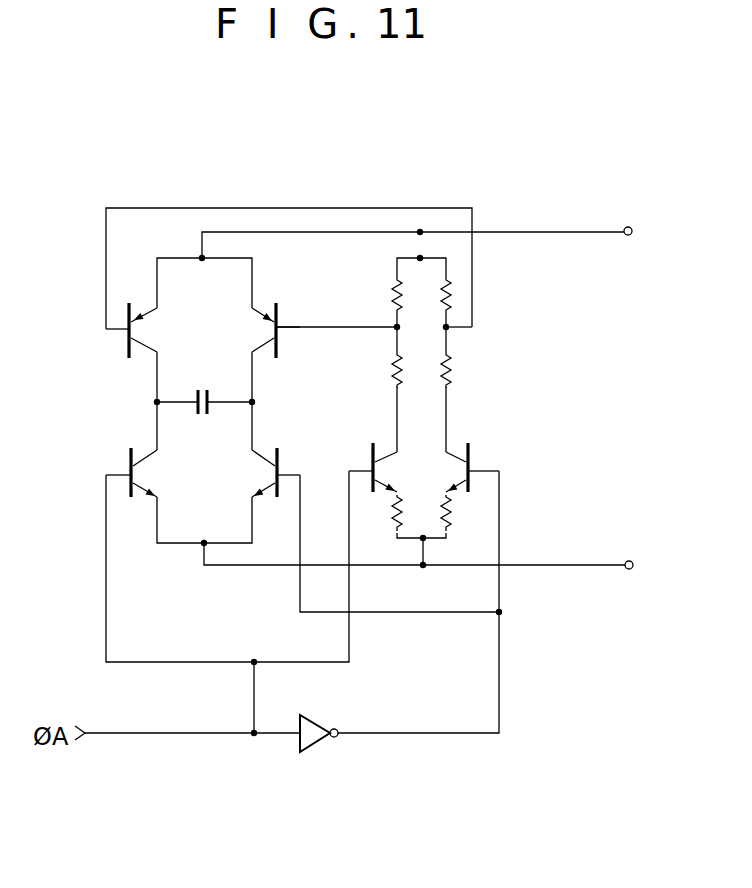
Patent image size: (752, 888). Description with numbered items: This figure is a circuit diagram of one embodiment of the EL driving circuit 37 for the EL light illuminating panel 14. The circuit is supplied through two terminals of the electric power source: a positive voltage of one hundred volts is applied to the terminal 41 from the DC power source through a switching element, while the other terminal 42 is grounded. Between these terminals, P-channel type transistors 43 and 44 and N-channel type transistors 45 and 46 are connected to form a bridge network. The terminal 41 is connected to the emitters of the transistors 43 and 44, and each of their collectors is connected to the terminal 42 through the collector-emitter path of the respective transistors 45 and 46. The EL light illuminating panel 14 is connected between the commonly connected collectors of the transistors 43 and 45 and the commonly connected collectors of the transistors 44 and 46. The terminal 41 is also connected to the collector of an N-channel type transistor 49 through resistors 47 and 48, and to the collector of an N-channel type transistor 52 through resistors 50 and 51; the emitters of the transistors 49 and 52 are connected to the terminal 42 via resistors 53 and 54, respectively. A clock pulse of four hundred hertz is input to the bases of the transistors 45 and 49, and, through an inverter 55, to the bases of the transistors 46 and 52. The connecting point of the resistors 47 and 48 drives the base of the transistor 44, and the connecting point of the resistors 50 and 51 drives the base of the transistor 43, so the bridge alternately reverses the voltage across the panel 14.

The EL driving circuit 37 is at (322, 207).
The terminal 41 is at (628, 227).
The terminal 42 is at (629, 560).
The P-channel type transistor 43 is at (145, 329).
The P-channel type transistor 44 is at (262, 336).
The EL light illuminating panel 14 is at (207, 394).
The N-channel type transistor 45 is at (150, 470).
The N-channel type transistor 46 is at (264, 477).
The resistor 47 is at (392, 300).
The resistor 48 is at (392, 374).
The N-channel type transistor 49 is at (392, 452).
The resistor 50 is at (441, 312).
The resistor 51 is at (446, 382).
The N-channel type transistor 52 is at (458, 452).
The resistor 53 is at (390, 508).
The resistor 54 is at (451, 505).
The inverter 55 is at (322, 725).